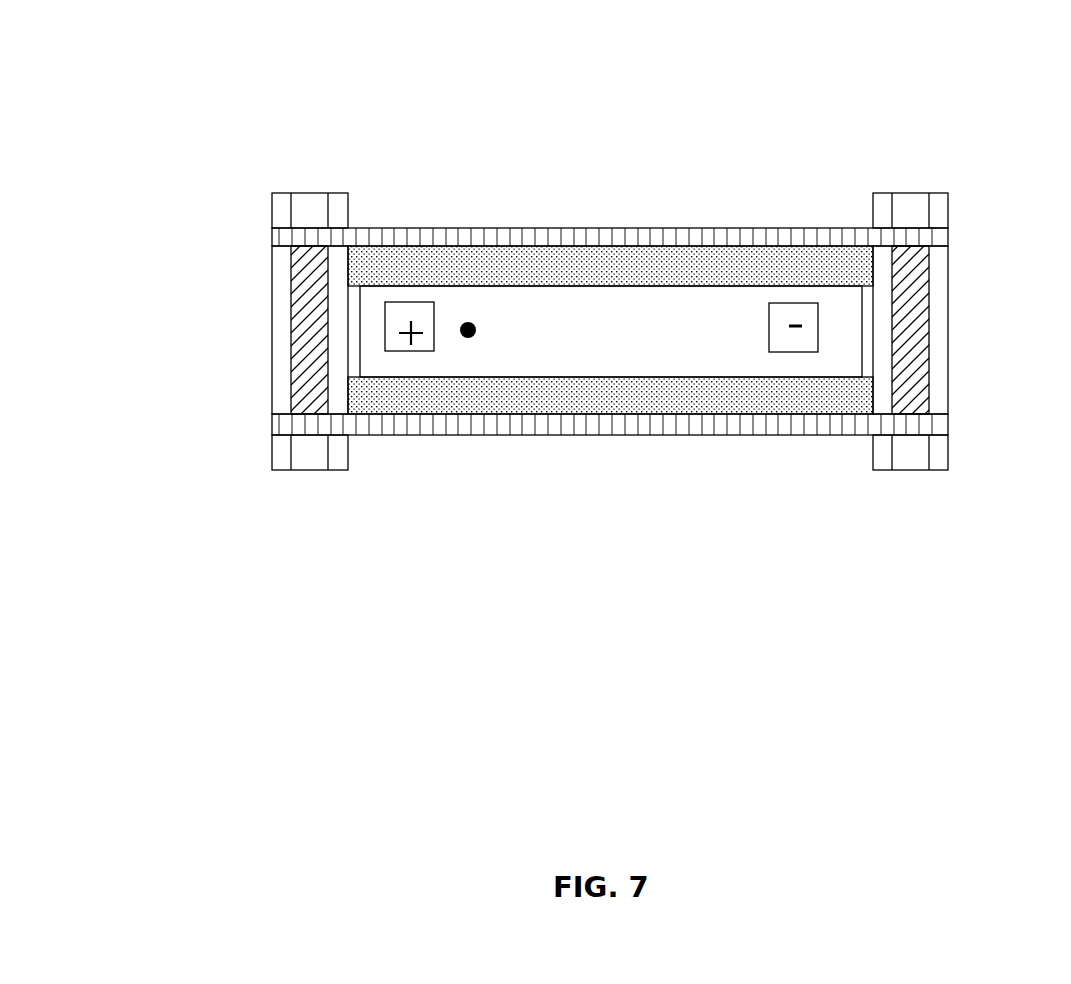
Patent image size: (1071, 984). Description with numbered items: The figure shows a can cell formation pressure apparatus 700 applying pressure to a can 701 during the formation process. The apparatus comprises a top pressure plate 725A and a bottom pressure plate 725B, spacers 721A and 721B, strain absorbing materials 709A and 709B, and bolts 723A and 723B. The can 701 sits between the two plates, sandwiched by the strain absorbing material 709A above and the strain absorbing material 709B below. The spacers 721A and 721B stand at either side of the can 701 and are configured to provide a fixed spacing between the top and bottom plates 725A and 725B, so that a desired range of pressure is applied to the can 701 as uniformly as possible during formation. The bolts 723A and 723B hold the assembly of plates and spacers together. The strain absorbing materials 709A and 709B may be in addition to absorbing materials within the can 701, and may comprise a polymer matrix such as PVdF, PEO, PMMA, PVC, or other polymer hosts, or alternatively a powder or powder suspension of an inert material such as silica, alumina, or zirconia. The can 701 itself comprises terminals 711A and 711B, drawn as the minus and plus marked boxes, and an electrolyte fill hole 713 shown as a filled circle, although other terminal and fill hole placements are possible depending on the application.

The formation pressure apparatus 700 is at (195, 105).
The can 701 is at (611, 331).
The strain absorbing material 709A is at (610, 266).
The strain absorbing material 709B is at (610, 395).
The terminal 711A is at (769, 303).
The terminal 711B is at (434, 302).
The electrolyte fill hole 713 is at (476, 330).
The spacer 721A is at (287, 392).
The spacer 721B is at (942, 350).
The bolt 723A is at (282, 450).
The bolt 723B is at (940, 449).
The top pressure plate 725A is at (492, 228).
The bottom pressure plate 725B is at (488, 435).